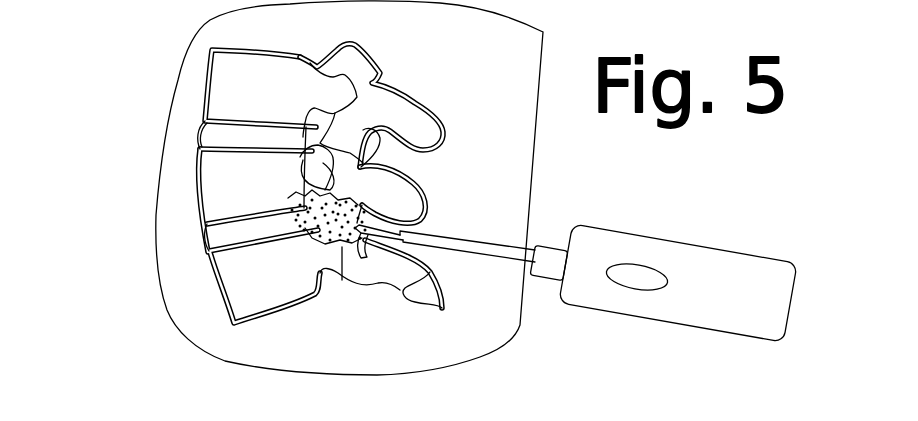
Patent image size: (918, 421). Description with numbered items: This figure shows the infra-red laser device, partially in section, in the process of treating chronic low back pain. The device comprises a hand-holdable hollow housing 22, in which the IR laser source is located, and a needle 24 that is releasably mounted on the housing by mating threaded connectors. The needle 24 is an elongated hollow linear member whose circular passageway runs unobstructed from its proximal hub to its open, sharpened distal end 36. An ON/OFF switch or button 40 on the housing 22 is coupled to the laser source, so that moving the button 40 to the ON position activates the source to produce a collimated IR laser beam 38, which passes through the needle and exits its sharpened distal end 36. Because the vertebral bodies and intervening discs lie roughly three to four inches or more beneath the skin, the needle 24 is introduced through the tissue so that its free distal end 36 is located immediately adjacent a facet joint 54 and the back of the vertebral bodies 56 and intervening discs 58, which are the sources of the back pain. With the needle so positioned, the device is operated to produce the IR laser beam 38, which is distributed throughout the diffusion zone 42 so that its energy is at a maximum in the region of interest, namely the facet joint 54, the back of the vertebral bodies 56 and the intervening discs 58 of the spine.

The housing 22 is at (630, 273).
The needle 24 is at (427, 263).
The distal end of the needle 36 is at (370, 253).
The IR laser beam 38 is at (340, 247).
The ON/OFF switch or button 40 is at (604, 291).
The diffusion zone 42 is at (323, 212).
The facet joint 54 is at (356, 221).
The vertebral bodies 56 is at (191, 201).
The intervening discs 58 is at (197, 150).